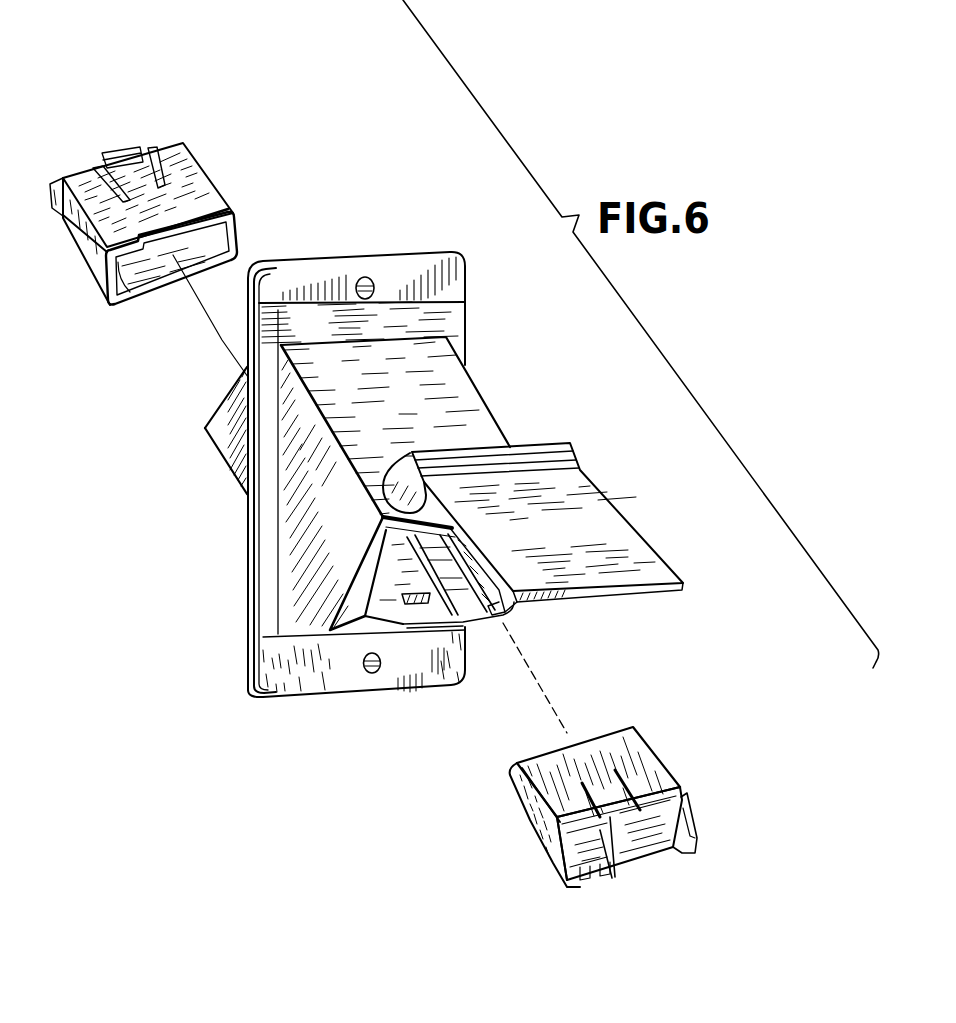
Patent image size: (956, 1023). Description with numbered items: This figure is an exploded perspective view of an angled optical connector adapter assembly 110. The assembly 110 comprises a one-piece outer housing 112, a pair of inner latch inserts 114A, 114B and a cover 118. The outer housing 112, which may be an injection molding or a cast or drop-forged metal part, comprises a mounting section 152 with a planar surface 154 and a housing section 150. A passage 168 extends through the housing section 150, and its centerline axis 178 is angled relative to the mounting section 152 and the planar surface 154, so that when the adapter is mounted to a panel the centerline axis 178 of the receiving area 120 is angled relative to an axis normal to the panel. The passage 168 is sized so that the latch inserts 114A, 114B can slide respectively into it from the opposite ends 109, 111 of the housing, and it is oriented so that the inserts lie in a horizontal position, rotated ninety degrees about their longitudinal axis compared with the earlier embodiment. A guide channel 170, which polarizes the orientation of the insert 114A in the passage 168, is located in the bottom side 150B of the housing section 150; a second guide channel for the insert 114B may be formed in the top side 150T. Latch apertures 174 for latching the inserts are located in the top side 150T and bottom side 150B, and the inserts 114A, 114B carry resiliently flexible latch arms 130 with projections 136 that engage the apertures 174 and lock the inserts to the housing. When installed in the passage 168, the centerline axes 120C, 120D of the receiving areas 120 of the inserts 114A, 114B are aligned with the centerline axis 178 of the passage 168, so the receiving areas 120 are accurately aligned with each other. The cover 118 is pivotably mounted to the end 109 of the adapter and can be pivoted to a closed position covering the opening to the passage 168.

The connector adapter assembly 110 is at (530, 410).
The mounting section 152 is at (246, 339).
The planar surface 154 is at (362, 260).
The housing section 150 is at (205, 428).
The top side 150T is at (455, 382).
The bottom side 150B is at (310, 623).
The end of the housing 111 is at (230, 388).
The outer housing 112 is at (229, 477).
The cover 118 is at (604, 518).
The end of the housing 109 is at (509, 605).
The passage 168 is at (382, 580).
The guide channel 170 is at (447, 625).
The latch aperture 174 is at (412, 604).
The centerline axis 178 is at (549, 691).
The latch insert 114A is at (516, 797).
The latch insert 114B is at (98, 280).
The centerline axis 120C is at (563, 726).
The centerline axis 120D is at (193, 297).
The receiving area 120 is at (672, 858).
The latch arm 130 is at (620, 797).
The projection 136 is at (652, 791).